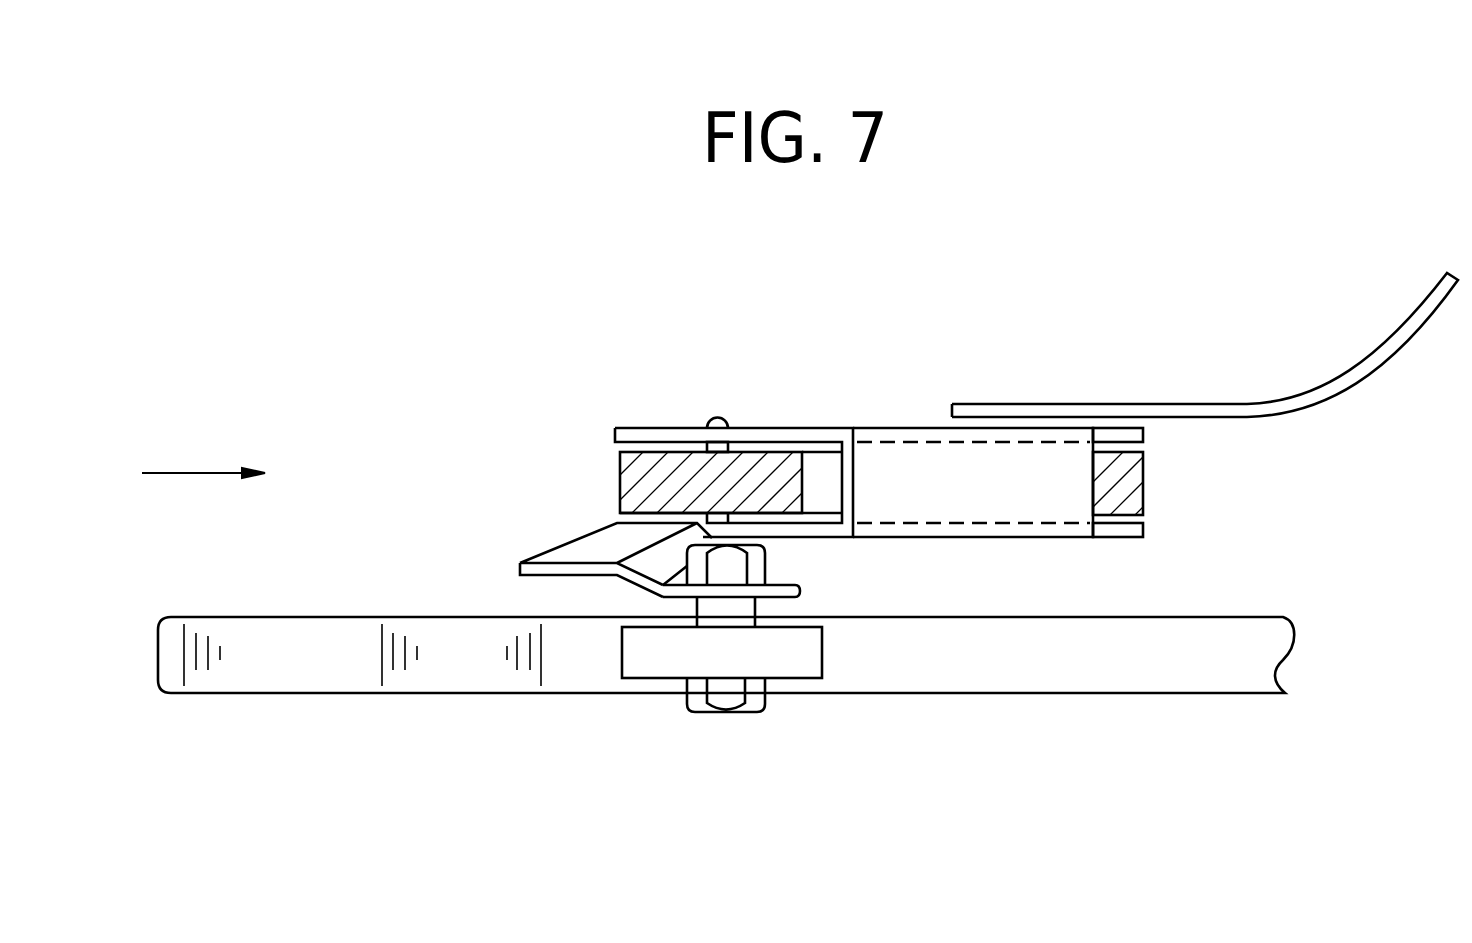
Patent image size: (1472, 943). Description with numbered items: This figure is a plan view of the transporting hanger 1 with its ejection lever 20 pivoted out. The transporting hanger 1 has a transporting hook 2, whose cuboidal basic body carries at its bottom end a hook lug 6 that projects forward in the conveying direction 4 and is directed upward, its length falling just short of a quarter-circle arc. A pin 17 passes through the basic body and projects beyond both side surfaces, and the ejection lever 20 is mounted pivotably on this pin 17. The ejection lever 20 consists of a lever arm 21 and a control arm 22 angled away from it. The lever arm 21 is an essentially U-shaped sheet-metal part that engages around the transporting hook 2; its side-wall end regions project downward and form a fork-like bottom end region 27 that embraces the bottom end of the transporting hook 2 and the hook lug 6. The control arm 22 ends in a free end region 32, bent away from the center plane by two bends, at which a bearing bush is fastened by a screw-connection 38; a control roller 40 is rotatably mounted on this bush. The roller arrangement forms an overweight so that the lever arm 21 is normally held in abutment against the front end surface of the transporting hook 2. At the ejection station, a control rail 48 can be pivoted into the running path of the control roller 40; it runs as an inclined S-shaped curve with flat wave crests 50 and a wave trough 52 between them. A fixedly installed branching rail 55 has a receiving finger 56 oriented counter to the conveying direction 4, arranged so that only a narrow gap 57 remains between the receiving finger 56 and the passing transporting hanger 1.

The transporting hanger 1 is at (789, 402).
The transporting hook 2 is at (627, 483).
The conveying direction 4 is at (195, 473).
The hook lug 6 is at (1118, 470).
The pin 17 is at (716, 417).
The ejection lever 20 is at (903, 468).
The lever arm 21 is at (1005, 462).
The control arm 22 is at (580, 548).
The fork-like bottom end region 27 is at (1128, 547).
The free end region 32 is at (797, 591).
The screw-connection 38 is at (723, 695).
The control roller 40 is at (797, 663).
The control rail 48 is at (1015, 670).
The wave crest 50 is at (323, 672).
The wave trough 52 is at (462, 672).
The branching rail 55 is at (1343, 382).
The receiving finger 56 is at (1097, 404).
The gap 57 is at (942, 418).